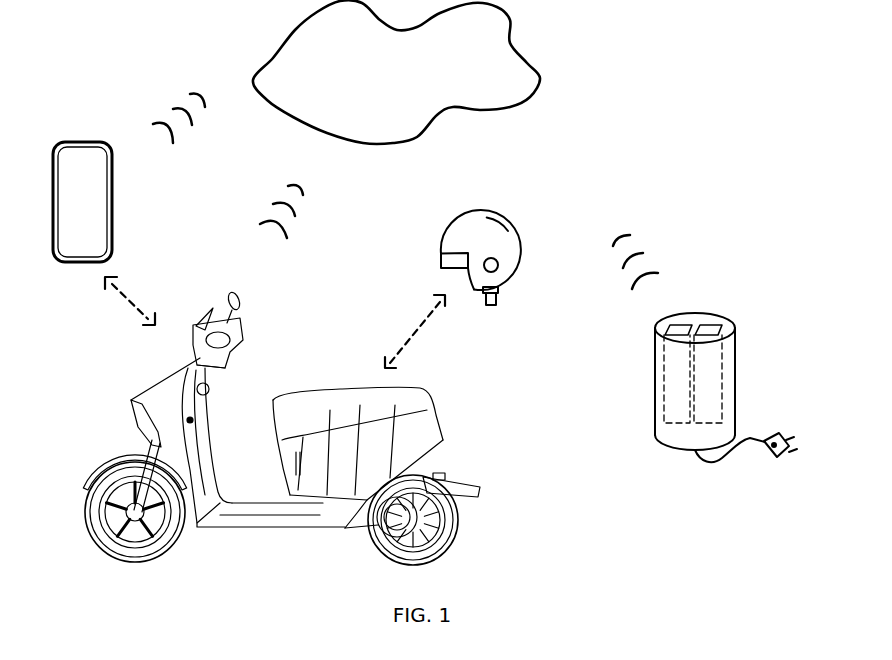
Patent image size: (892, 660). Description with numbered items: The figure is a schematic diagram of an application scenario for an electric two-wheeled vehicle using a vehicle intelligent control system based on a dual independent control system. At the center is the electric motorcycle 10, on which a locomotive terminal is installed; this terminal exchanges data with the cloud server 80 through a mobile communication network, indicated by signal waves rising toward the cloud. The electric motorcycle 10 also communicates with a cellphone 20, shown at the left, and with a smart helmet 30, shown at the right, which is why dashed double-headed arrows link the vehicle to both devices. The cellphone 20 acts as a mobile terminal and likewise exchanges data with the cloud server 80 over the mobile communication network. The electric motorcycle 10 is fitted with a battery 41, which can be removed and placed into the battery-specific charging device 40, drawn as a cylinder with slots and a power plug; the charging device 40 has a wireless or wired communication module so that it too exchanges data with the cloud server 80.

The electric motorcycle 10 is at (162, 381).
The cellphone 20 is at (100, 202).
The smart helmet 30 is at (513, 275).
The charging device 40 is at (665, 433).
The battery 41 is at (683, 325).
The cloud server 80 is at (512, 87).